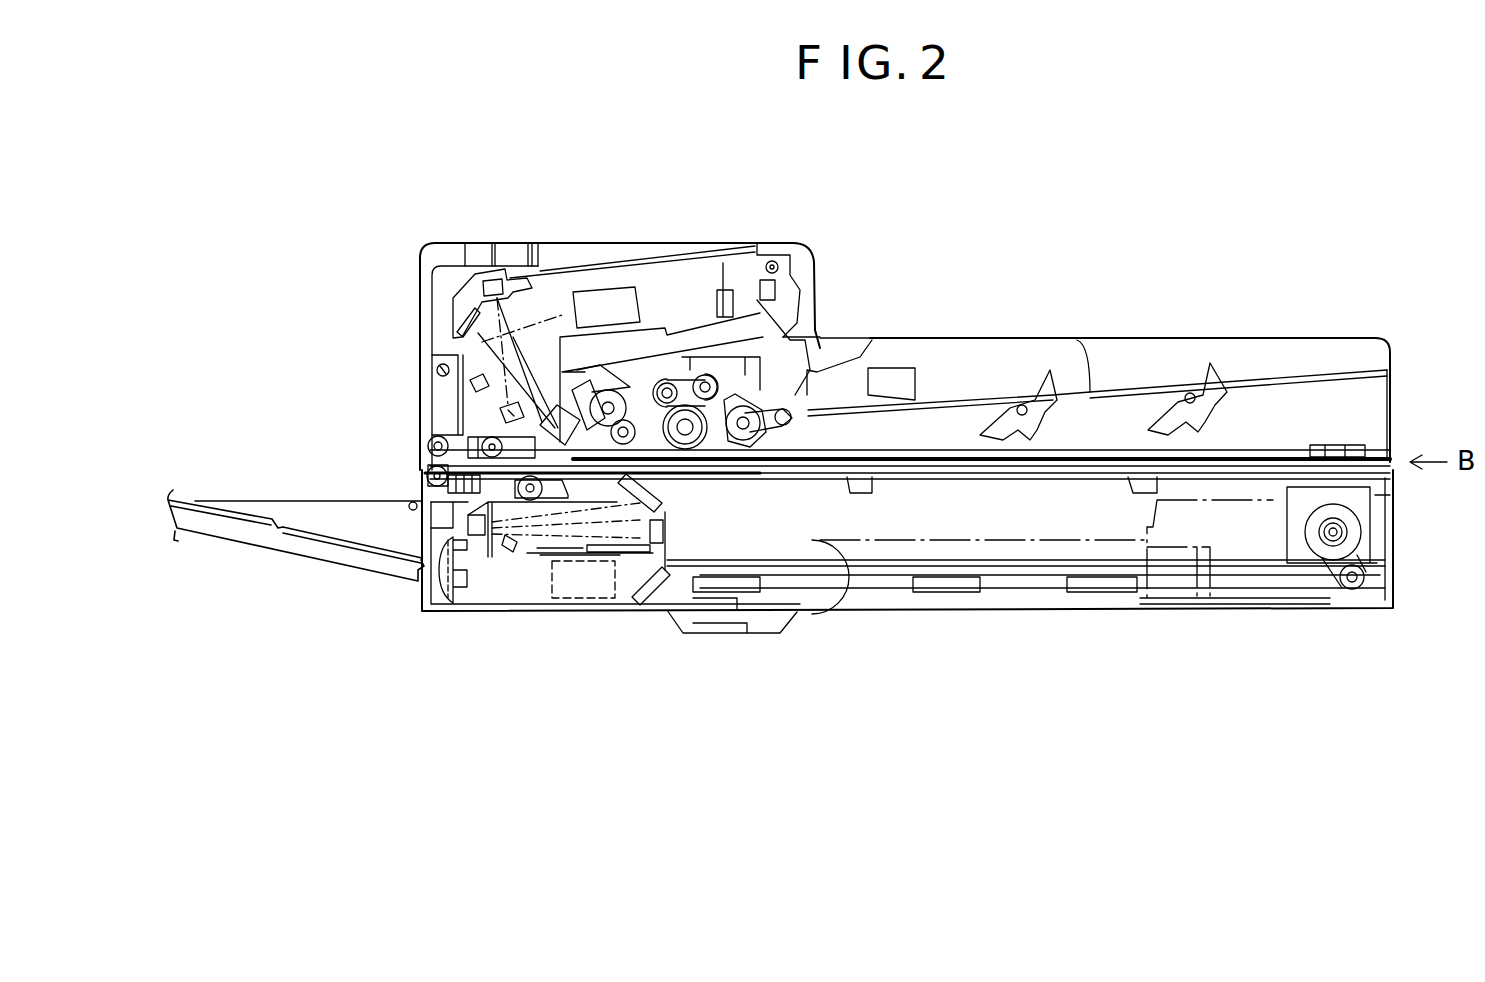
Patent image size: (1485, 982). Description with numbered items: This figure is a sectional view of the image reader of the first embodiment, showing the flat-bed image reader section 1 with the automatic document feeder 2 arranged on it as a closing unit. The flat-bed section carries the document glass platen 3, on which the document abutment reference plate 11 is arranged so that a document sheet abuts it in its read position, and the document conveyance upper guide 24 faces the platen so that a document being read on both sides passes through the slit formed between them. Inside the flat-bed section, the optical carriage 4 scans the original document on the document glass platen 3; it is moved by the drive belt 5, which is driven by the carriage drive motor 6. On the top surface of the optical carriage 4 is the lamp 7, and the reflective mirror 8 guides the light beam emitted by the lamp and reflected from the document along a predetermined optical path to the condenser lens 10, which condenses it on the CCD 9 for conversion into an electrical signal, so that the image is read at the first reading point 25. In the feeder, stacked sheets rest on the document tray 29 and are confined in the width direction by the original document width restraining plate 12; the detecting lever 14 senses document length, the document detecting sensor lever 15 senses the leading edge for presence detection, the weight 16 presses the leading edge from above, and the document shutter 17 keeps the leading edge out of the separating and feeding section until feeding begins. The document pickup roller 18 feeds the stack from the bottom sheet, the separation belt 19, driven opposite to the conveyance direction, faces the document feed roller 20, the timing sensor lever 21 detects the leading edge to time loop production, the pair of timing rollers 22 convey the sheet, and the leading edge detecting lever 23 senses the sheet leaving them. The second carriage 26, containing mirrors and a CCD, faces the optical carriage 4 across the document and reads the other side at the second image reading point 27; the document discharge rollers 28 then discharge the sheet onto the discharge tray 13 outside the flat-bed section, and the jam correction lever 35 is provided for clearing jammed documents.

The flat-bed image reader section 1 is at (1044, 625).
The automatic document feeder 2 is at (1257, 325).
The document glass platen 3 is at (917, 470).
The optical carriage 4 is at (535, 602).
The drive belt 5 is at (1297, 597).
The carriage drive motor 6 is at (1377, 597).
The lamp 7 is at (535, 505).
The reflective mirror 8 is at (650, 585).
The CCD 9 is at (453, 578).
The condenser lens 10 is at (602, 557).
The document abutment reference plate 11 is at (575, 505).
The original document width restraining plate 12 is at (998, 347).
The document tray 13 is at (1160, 387).
The detecting lever 14 is at (1053, 390).
The document detecting sensor lever 15 is at (780, 360).
The weight 16 is at (743, 357).
The document shutter 17 is at (790, 430).
The document pickup roller 18 is at (750, 440).
The separation belt 19 is at (673, 350).
The document feed roller 20 is at (633, 372).
The timing sensor lever 21 is at (617, 392).
The timing rollers 22 is at (607, 392).
The leading edge detecting lever 23 is at (557, 347).
The document conveyance upper guide 24 is at (483, 432).
The first reading point 25 is at (430, 445).
The second carriage 26 is at (455, 283).
The second image reading point 27 is at (427, 482).
The document discharge rollers 28 is at (427, 468).
The discharge tray 29 is at (287, 547).
The jam correction lever 35 is at (800, 330).